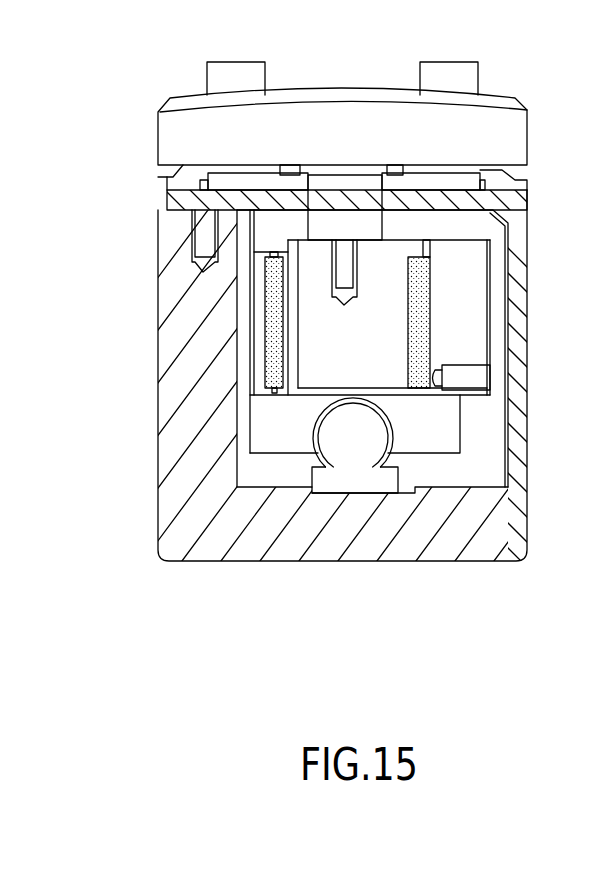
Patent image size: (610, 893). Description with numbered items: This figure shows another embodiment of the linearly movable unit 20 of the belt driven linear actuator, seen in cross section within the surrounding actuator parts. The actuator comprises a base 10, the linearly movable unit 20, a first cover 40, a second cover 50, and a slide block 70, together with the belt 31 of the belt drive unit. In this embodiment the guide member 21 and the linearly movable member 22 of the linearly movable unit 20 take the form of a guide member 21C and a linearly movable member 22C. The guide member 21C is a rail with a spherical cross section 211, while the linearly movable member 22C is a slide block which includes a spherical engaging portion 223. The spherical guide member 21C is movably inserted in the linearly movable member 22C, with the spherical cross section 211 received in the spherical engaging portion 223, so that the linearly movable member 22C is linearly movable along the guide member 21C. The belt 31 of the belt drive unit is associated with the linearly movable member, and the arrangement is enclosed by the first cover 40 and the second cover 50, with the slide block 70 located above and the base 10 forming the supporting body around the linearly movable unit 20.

The base 10 is at (158, 340).
The linearly movable unit 20 is at (386, 438).
The guide member 21 is at (359, 527).
The guide member 21C is at (359, 527).
The spherical cross section 211 is at (385, 450).
The linearly movable member 22 is at (384, 415).
The linearly movable member 22C is at (384, 415).
The spherical engaging portion 223 is at (448, 433).
The belt 31 is at (424, 318).
The first cover 40 is at (167, 196).
The second cover 50 is at (528, 400).
The slide block 70 is at (188, 93).